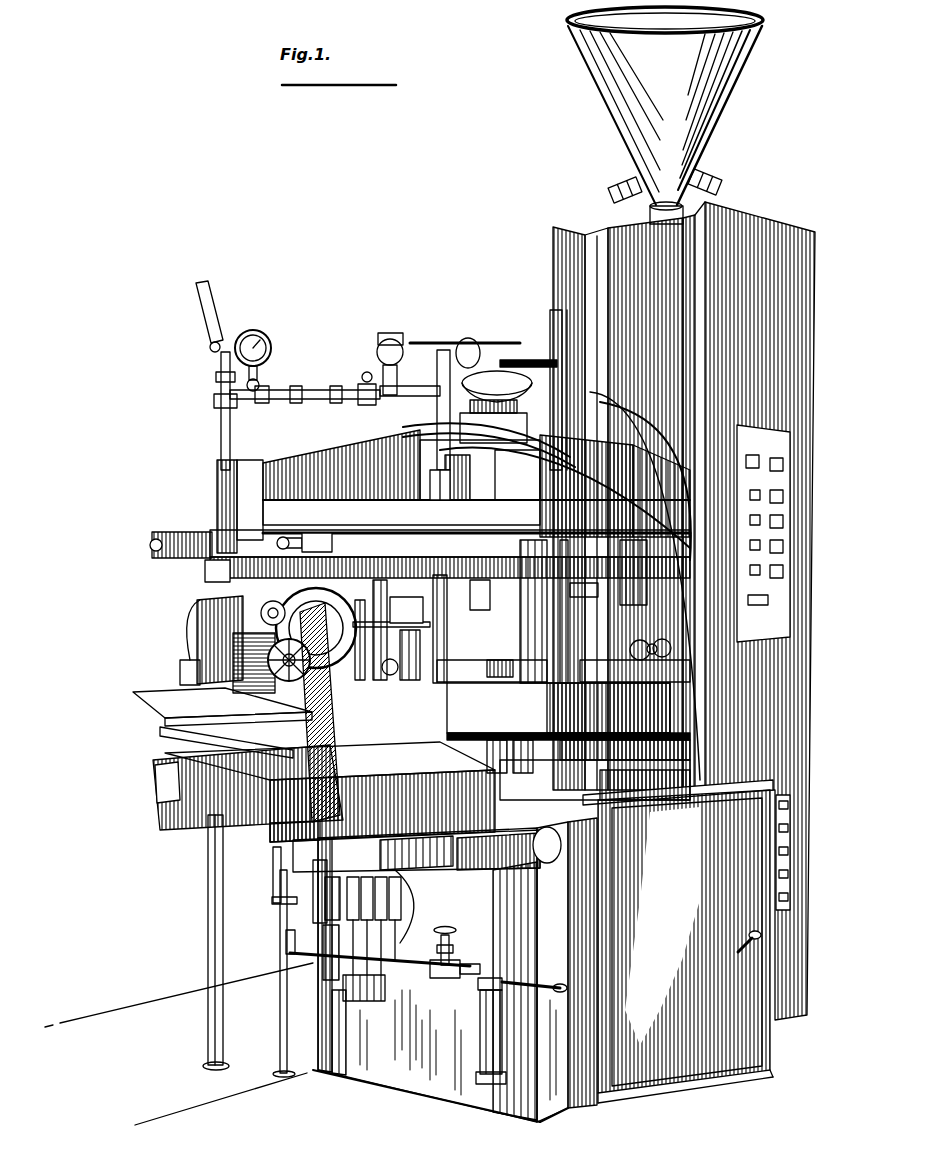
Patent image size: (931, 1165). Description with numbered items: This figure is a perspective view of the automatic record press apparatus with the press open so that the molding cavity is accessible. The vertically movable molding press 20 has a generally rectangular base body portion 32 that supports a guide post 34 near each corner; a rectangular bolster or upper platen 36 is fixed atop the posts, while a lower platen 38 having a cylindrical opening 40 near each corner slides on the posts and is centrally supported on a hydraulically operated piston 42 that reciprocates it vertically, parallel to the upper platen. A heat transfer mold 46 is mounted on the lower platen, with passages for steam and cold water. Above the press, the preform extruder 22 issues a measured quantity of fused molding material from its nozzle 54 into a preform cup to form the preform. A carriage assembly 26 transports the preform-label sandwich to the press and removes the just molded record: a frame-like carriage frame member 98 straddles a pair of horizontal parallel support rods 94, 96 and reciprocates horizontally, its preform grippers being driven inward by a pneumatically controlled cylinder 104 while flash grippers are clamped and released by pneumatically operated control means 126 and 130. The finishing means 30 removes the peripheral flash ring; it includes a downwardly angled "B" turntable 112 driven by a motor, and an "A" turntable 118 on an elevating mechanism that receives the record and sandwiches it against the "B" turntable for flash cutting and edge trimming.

The molding press 20 is at (325, 379).
The preform extruder 22 is at (792, 355).
The carriage assembly 26 is at (222, 543).
The finishing means 30 is at (196, 651).
The base body portion 32 is at (470, 918).
The guide post 34 is at (518, 620).
The upper platen 36 is at (458, 497).
The lower platen 38 is at (445, 740).
The cylindrical opening 40 is at (621, 669).
The hydraulically operated piston 42 is at (500, 770).
The heat transfer mold 46 is at (473, 682).
The nozzle 54 is at (625, 642).
The support rod 94 is at (272, 541).
The support rod 96 is at (156, 540).
The carriage frame member 98 is at (205, 573).
The pneumatically controlled cylinder 104 is at (576, 596).
The "B" turntable 112 is at (300, 597).
The "A" turntable 118 is at (425, 620).
The pneumatically operated control means 126 is at (495, 591).
The pneumatically operated control means 130 is at (433, 494).